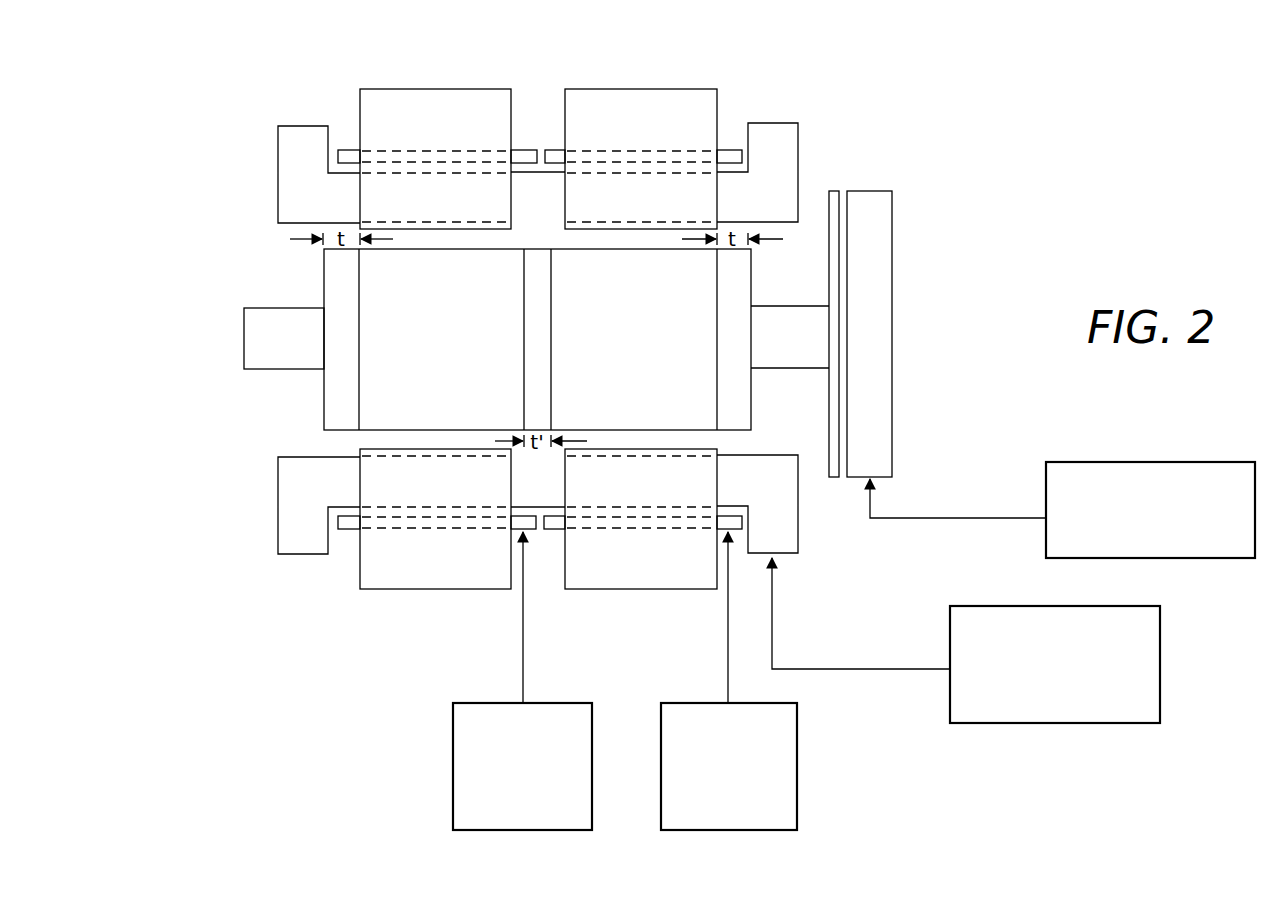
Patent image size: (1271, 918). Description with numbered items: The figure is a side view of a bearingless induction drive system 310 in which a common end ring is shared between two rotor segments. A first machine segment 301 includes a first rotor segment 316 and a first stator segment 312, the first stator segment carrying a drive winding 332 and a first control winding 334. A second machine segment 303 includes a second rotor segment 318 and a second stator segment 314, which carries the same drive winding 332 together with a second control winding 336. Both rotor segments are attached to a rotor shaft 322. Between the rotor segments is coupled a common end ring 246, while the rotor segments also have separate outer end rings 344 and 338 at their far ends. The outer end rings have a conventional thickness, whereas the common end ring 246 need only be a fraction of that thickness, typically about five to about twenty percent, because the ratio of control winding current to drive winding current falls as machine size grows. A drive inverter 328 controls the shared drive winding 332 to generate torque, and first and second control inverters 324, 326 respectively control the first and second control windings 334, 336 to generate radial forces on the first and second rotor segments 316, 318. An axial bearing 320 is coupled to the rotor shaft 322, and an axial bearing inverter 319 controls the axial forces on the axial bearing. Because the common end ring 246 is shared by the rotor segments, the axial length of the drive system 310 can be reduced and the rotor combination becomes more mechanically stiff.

The bearingless induction drive system 310 is at (830, 94).
The first stator segment 312 is at (432, 100).
The second stator segment 314 is at (635, 96).
The first control winding 334 is at (524, 150).
The second control winding 336 is at (732, 150).
The drive winding 332 is at (798, 170).
The common end ring 246 is at (540, 268).
The first rotor segment 316 is at (441, 339).
The second rotor segment 318 is at (634, 339).
The outer end ring 344 is at (330, 402).
The outer end ring 338 is at (733, 397).
The rotor shaft 322 is at (250, 325).
The axial bearing 320 is at (900, 376).
The first machine segment 301 is at (441, 600).
The second machine segment 303 is at (646, 605).
The first control inverter 324 is at (522, 681).
The second control inverter 326 is at (729, 681).
The drive inverter 328 is at (966, 640).
The axial bearing inverter 319 is at (1062, 510).